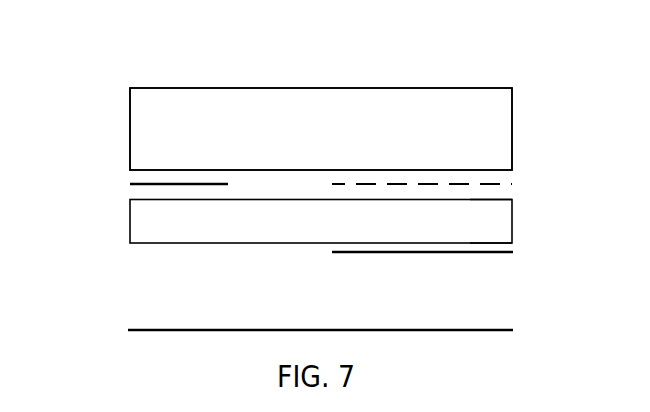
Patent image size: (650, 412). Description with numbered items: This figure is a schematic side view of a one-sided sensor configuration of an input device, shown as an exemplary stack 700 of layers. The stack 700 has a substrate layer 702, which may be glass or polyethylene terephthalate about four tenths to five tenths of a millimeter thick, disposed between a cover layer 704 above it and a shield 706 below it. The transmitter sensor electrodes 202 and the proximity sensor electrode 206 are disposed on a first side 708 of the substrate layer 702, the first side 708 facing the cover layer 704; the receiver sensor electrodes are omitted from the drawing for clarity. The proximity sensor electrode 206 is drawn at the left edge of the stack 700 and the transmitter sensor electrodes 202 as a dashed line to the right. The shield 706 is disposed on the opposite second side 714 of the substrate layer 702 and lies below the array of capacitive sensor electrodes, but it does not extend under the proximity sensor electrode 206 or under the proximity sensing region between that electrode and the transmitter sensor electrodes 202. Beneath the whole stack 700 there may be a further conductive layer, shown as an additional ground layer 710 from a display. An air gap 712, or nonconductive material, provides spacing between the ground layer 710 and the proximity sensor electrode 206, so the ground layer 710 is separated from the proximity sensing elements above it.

The stack 700 is at (385, 70).
The cover layer 704 is at (335, 140).
The substrate layer 702 is at (335, 226).
The proximity sensor electrode 206 is at (131, 189).
The transmitter sensor electrodes 202 is at (518, 178).
The first side 708 is at (493, 199).
The second side 714 is at (505, 243).
The shield 706 is at (509, 261).
The air gap 712 is at (336, 302).
The ground layer 710 is at (503, 338).